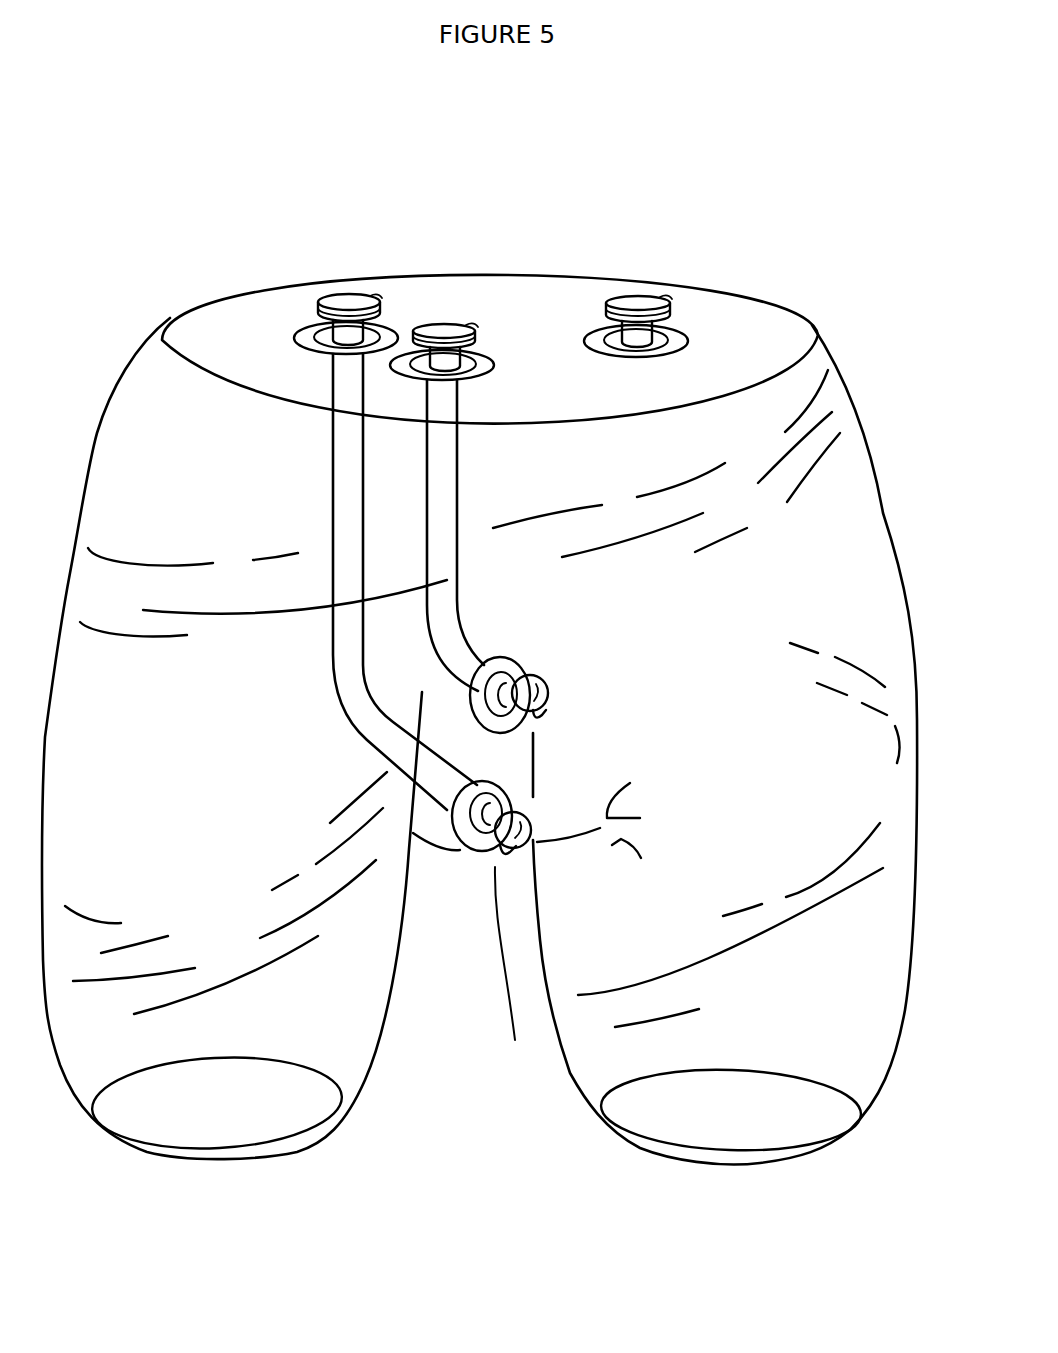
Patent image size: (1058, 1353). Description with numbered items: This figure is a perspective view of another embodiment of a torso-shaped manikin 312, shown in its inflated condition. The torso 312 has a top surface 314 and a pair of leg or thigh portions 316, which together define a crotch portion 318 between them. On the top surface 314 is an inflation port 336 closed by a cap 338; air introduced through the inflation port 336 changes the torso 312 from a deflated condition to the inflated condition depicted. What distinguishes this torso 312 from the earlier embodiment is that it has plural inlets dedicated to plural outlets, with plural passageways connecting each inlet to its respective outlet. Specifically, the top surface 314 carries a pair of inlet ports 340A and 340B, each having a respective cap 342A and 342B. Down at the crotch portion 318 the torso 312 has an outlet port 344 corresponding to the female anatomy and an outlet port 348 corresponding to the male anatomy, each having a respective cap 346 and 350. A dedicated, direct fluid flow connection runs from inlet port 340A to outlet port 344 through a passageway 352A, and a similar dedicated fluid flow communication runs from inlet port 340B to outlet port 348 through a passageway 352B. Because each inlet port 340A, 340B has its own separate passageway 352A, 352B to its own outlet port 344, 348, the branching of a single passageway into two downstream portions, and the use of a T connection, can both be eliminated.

The torso-shaped manikin 312 is at (560, 243).
The top surface 314 is at (235, 333).
The leg or thigh portions 316 is at (245, 1107).
The crotch portion 318 is at (508, 976).
The inflation port 336 is at (698, 306).
The cap 338 is at (640, 303).
The inlet port 340A is at (312, 382).
The inlet port 340B is at (490, 409).
The cap 342A is at (350, 300).
The cap 342B is at (450, 330).
The outlet port 344 is at (466, 878).
The cap 346 is at (537, 845).
The outlet port 348 is at (541, 646).
The cap 350 is at (548, 687).
The passageway 352A is at (345, 620).
The passageway 352B is at (443, 517).